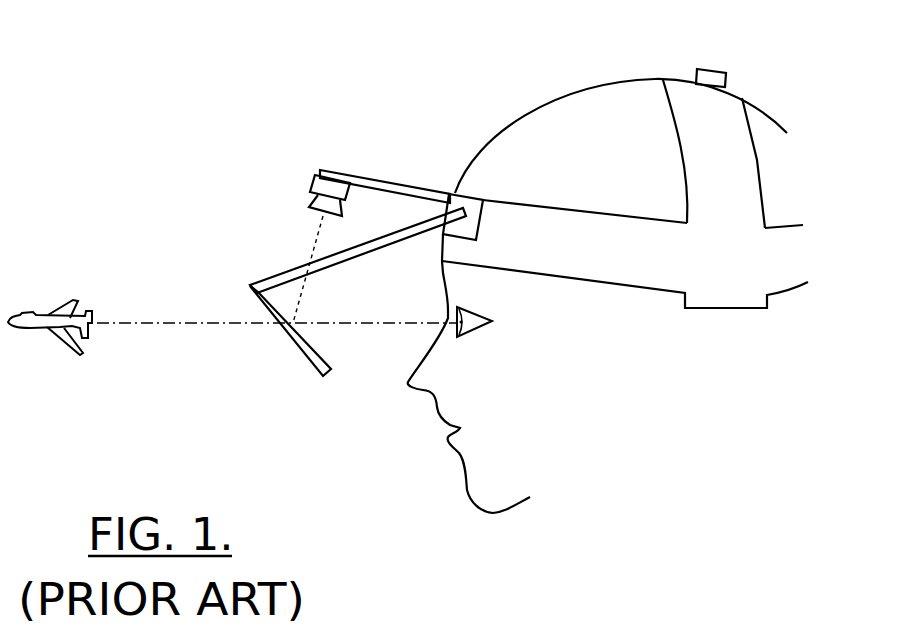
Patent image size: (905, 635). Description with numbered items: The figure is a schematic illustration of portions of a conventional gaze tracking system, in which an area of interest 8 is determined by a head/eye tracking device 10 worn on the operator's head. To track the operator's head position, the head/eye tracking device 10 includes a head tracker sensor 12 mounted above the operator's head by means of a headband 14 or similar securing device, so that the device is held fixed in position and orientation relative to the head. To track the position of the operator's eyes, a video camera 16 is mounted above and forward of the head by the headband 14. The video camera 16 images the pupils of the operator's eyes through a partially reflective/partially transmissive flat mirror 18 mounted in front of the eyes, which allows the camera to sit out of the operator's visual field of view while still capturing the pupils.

The area of interest 8 is at (62, 279).
The head/eye tracking device 10 is at (402, 106).
The head tracker sensor 12 is at (710, 67).
The headband 14 is at (668, 290).
The video camera 16 is at (313, 177).
The partially reflective/partially transmissive flat mirror 18 is at (302, 350).